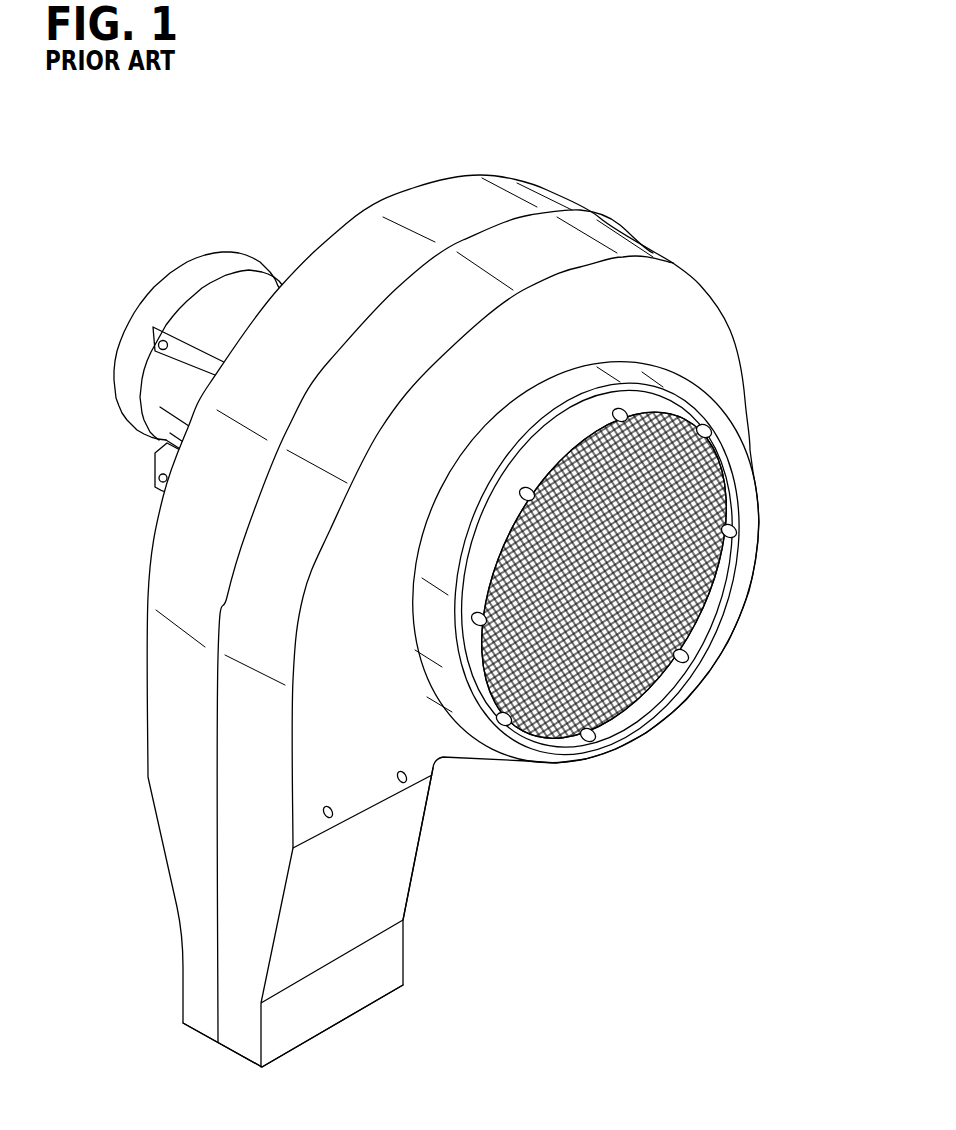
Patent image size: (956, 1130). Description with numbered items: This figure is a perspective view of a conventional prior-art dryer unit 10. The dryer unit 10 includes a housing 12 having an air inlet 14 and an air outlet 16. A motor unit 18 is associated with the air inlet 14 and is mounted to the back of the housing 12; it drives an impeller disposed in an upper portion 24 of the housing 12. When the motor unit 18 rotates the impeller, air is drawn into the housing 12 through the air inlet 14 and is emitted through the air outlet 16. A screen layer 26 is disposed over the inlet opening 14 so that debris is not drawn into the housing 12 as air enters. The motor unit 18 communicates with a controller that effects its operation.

The dryer unit 10 is at (638, 133).
The housing 12 is at (443, 207).
The air inlet 14 is at (690, 578).
The air outlet 16 is at (208, 1042).
The motor unit 18 is at (228, 297).
The upper portion 24 is at (702, 312).
The screen layer 26 is at (703, 470).